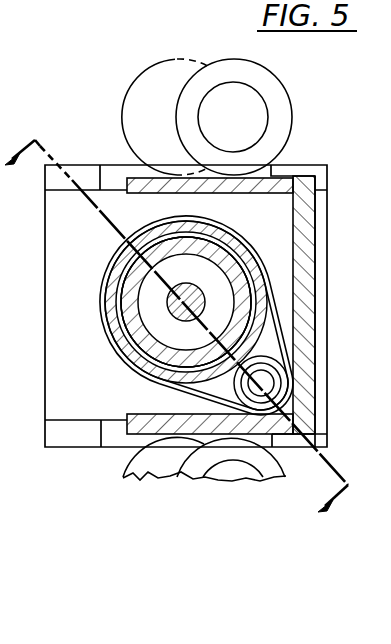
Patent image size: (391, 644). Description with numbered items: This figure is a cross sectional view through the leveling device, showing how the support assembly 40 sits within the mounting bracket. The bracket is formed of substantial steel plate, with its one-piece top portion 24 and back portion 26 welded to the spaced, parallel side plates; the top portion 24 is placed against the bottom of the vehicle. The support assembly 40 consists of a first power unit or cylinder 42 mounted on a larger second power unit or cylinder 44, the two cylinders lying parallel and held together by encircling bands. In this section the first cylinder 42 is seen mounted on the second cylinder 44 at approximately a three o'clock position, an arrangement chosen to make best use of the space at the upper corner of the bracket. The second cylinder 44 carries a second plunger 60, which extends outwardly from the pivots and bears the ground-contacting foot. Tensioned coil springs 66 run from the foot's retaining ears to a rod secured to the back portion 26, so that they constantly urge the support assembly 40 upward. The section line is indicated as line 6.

The section line 6- 6 is at (179, 329).
The top portion 24 is at (305, 275).
The back portion 26 is at (271, 177).
The support assembly 40 is at (165, 386).
The first power unit or cylinder 42 is at (284, 383).
The second power unit or cylinder 44 is at (206, 233).
The second plunger 60 is at (133, 280).
The tensioned coil springs 66 is at (253, 73).